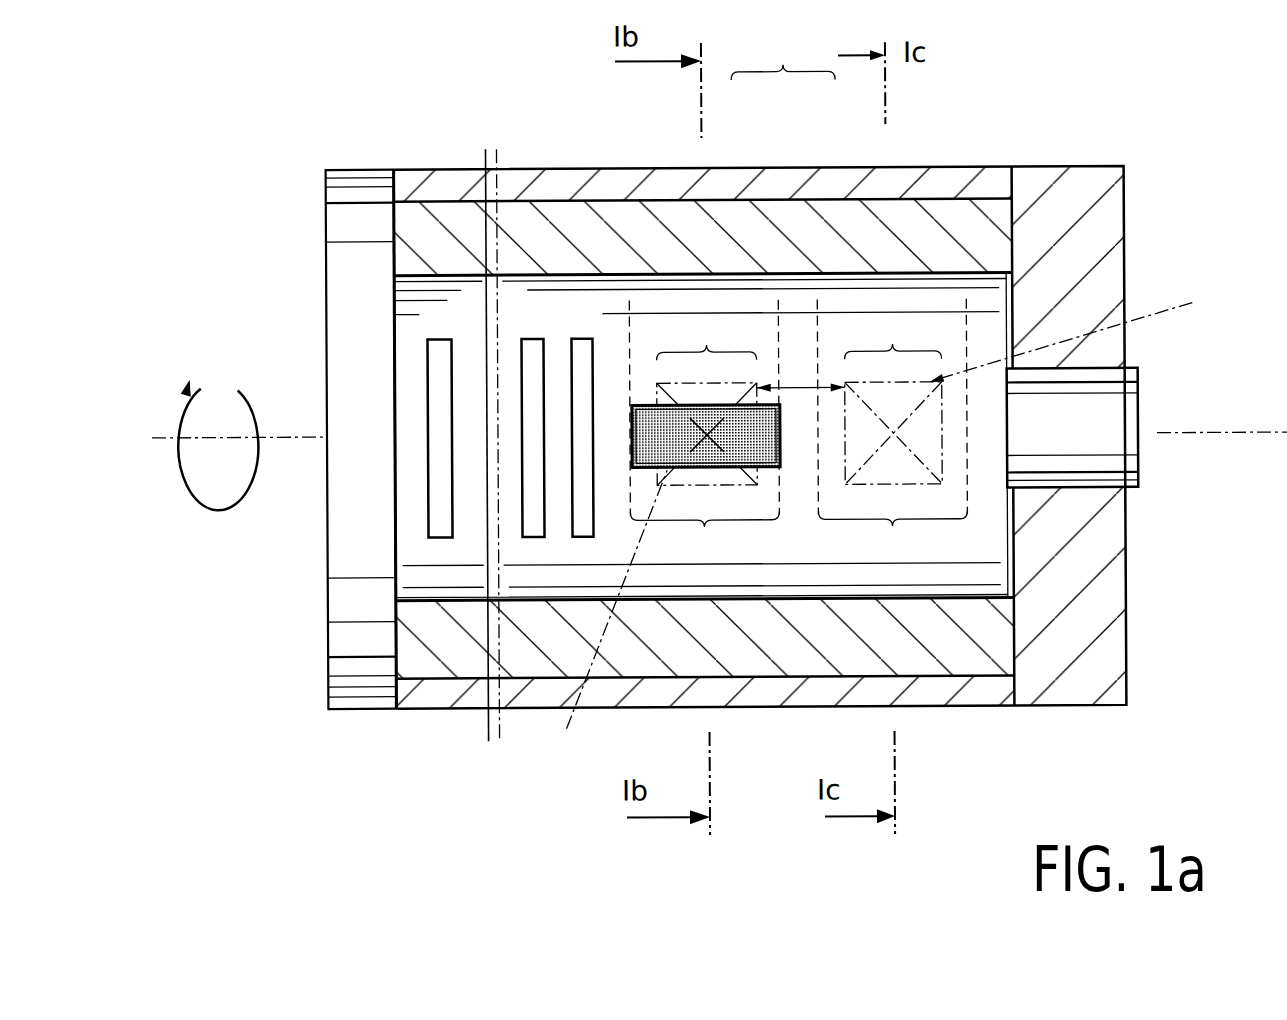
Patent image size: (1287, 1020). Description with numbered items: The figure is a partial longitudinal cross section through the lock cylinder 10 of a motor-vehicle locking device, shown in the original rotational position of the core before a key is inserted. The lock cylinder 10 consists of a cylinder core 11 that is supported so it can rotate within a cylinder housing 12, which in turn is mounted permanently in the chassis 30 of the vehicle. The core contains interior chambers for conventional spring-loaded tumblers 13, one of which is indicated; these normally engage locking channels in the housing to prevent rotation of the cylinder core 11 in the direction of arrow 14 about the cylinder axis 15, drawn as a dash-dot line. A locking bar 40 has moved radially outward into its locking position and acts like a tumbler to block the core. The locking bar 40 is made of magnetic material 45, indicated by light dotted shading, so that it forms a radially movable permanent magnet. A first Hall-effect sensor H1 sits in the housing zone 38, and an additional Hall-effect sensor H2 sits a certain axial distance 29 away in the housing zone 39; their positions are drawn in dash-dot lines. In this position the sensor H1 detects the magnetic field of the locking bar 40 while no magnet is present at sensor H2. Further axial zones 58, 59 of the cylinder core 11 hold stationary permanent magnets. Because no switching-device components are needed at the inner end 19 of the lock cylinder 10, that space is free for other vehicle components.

The lock cylinder 10 is at (783, 56).
The cylinder core 11 is at (800, 280).
The cylinder housing 12 is at (745, 213).
The tumblers 13 is at (581, 380).
The arrow 14 is at (198, 502).
The cylinder axis 15 is at (1252, 438).
The inner end 19 is at (1073, 443).
The axial distance 29 is at (799, 387).
The chassis 30 is at (1097, 268).
The housing zone 38 is at (706, 401).
The housing zone 39 is at (893, 400).
The locking bar 40 is at (630, 400).
The magnetic material 45 is at (748, 430).
The axial zone 58 is at (704, 432).
The axial zone 59 is at (892, 431).
The first sensor H1 is at (604, 622).
The additional sensor H2 is at (1079, 331).